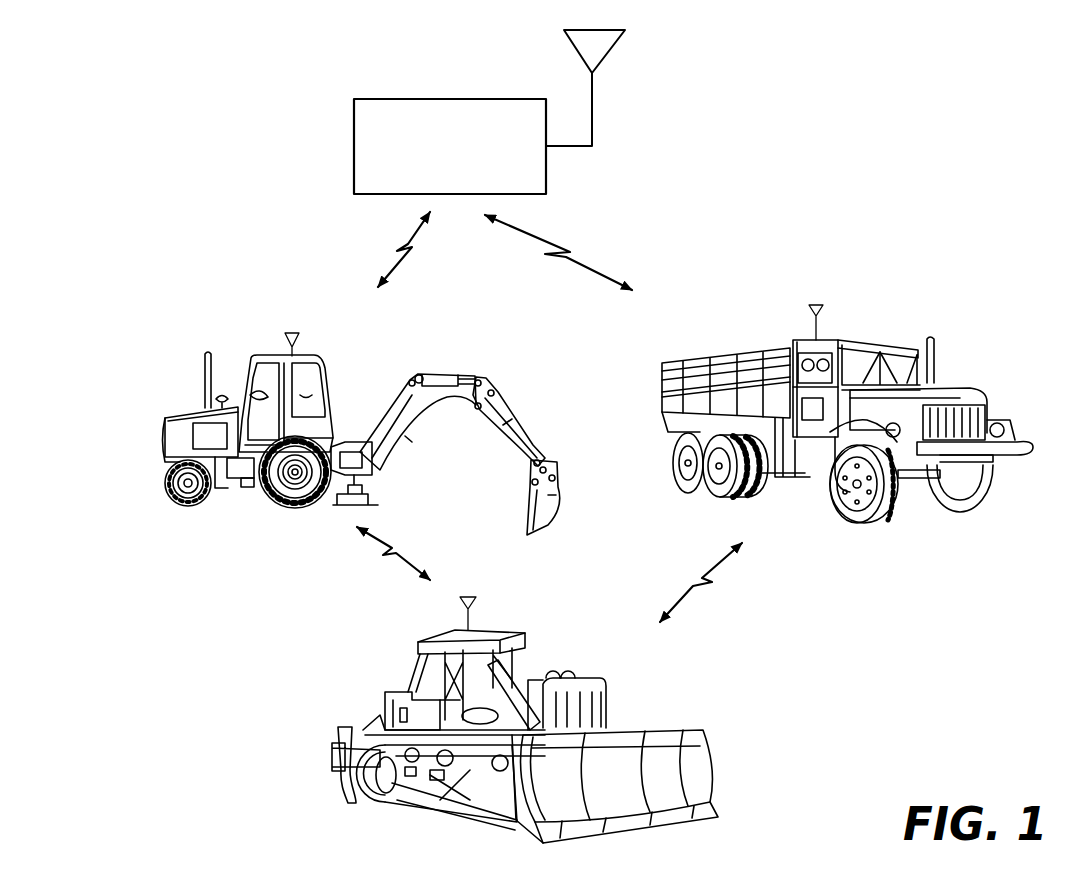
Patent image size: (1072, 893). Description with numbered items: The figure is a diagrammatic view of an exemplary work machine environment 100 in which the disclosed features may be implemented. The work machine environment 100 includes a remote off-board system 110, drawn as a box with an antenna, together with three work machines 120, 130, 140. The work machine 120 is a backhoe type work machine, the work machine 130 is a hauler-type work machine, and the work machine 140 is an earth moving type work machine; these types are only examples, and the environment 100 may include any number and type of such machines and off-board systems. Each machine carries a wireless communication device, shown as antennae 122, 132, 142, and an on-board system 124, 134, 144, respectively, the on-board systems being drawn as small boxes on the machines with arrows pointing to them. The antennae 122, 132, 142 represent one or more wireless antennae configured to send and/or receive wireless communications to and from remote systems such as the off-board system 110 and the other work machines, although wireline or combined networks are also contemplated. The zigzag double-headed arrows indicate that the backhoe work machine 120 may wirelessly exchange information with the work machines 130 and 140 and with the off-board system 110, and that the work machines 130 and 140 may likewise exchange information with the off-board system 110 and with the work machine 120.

The work machine environment 100 is at (963, 607).
The remote off-board system 110 is at (429, 157).
The work machine 120 is at (305, 408).
The antenna 122 is at (293, 331).
The on-board system 124 is at (211, 437).
The work machine 130 is at (813, 397).
The antenna 132 is at (829, 294).
The on-board system 134 is at (811, 426).
The work machine 140 is at (491, 716).
The antenna 142 is at (482, 598).
The on-board system 144 is at (410, 704).